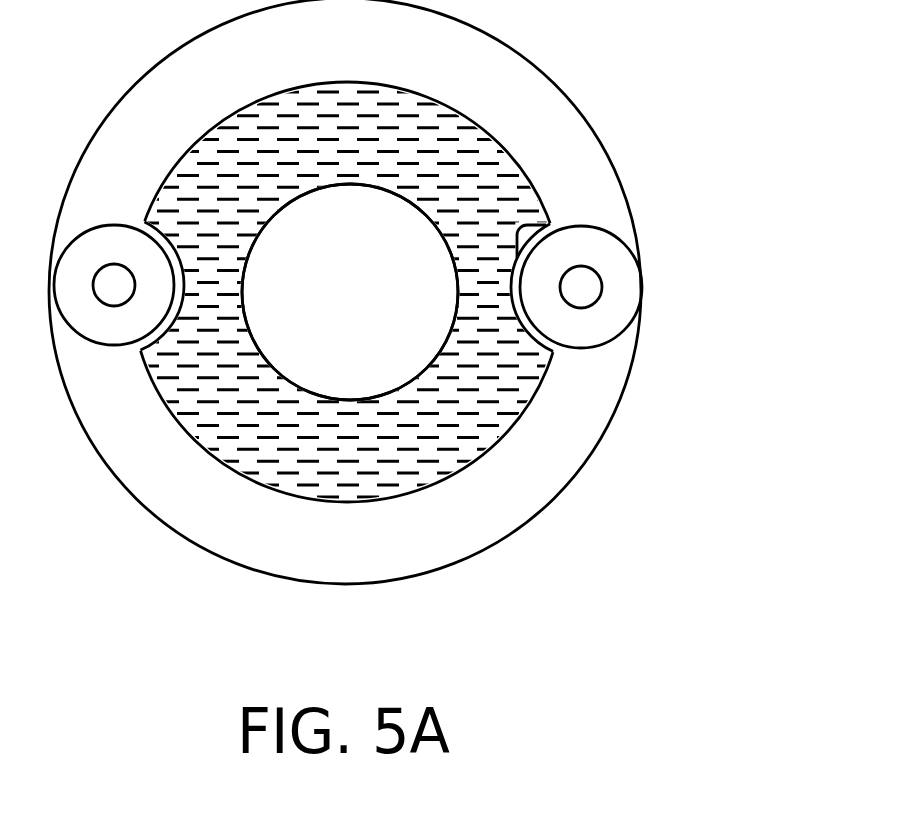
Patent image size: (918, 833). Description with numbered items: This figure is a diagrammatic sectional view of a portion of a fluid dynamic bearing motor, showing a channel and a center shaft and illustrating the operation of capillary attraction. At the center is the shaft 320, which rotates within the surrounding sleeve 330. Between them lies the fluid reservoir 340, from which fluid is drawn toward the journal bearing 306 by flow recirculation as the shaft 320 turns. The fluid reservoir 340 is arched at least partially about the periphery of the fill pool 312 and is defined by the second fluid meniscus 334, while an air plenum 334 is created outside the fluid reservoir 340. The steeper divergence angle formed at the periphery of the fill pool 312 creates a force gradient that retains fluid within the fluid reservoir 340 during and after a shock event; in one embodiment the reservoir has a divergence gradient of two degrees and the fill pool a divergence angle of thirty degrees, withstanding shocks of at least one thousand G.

The journal bearing 306 is at (422, 208).
The fill pool 312 is at (622, 283).
The shaft 320 is at (373, 309).
The sleeve 330 is at (363, 57).
The second fluid meniscus 334 is at (549, 219).
The fluid reservoir 340 is at (477, 217).